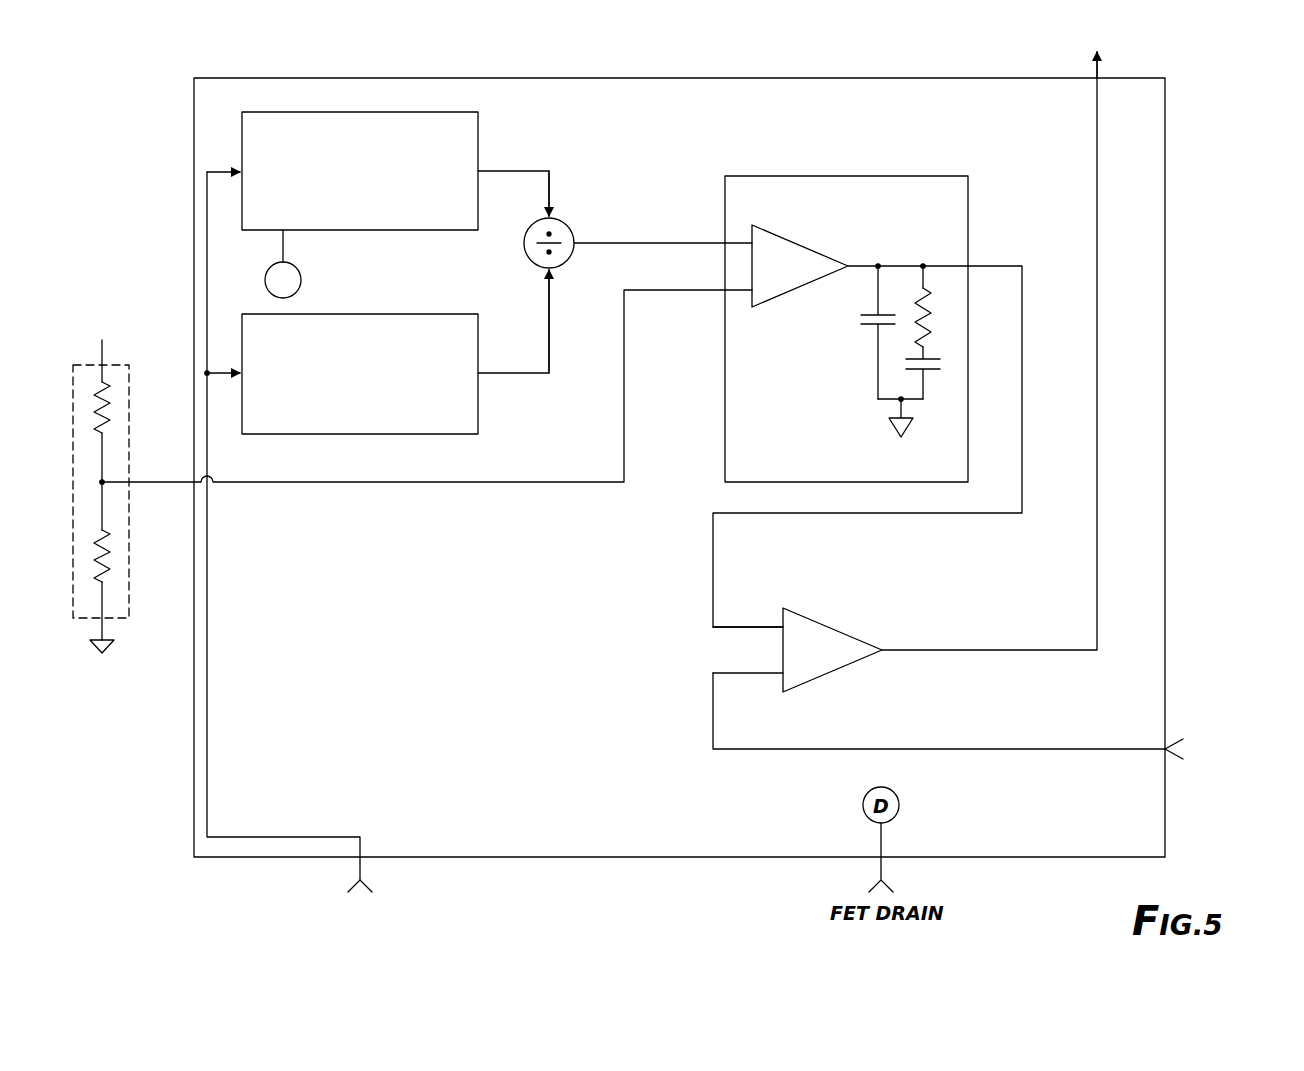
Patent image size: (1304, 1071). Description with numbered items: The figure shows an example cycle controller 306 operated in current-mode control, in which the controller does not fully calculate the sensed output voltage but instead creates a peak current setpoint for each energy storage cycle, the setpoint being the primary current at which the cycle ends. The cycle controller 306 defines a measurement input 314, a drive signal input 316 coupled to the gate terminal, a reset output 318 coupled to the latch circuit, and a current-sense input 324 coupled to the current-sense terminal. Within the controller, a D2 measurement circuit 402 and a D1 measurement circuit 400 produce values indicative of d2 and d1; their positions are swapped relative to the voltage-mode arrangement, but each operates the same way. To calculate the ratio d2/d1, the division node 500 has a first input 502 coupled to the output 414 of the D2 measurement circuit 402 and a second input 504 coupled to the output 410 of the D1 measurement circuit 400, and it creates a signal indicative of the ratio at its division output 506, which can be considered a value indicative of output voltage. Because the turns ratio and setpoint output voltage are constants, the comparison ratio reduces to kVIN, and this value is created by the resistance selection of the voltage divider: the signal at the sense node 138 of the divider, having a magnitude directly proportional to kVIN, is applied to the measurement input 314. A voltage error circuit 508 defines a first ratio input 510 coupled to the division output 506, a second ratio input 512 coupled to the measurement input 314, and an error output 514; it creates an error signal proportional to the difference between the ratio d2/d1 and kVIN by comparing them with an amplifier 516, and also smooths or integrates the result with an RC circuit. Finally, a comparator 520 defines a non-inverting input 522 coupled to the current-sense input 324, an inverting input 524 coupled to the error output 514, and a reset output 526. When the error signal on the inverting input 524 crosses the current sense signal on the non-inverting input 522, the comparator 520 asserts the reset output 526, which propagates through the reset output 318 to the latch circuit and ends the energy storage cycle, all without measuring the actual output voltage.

The cycle controller 306 is at (226, 78).
The sense node 138 is at (104, 480).
The measurement input 314 is at (192, 484).
The drive signal input 316 is at (362, 856).
The reset output 318 is at (1094, 78).
The current-sense input 324 is at (1163, 748).
The D1 measurement circuit 400 is at (360, 374).
The D2 measurement circuit 402 is at (360, 205).
The output of the D1 measurement circuit 410 is at (480, 372).
The output of the D2 measurement circuit 414 is at (480, 173).
The division node 500 is at (522, 243).
The first input 502 is at (536, 218).
The second input 504 is at (558, 262).
The division output 506 is at (575, 232).
The voltage error circuit 508 is at (806, 298).
The first ratio input 510 is at (724, 242).
The second ratio input 512 is at (724, 292).
The error output 514 is at (970, 264).
The amplifier 516 is at (795, 238).
The comparator 520 is at (838, 612).
The non-inverting input 522 is at (782, 674).
The inverting input 524 is at (782, 627).
The reset output 526 is at (884, 648).